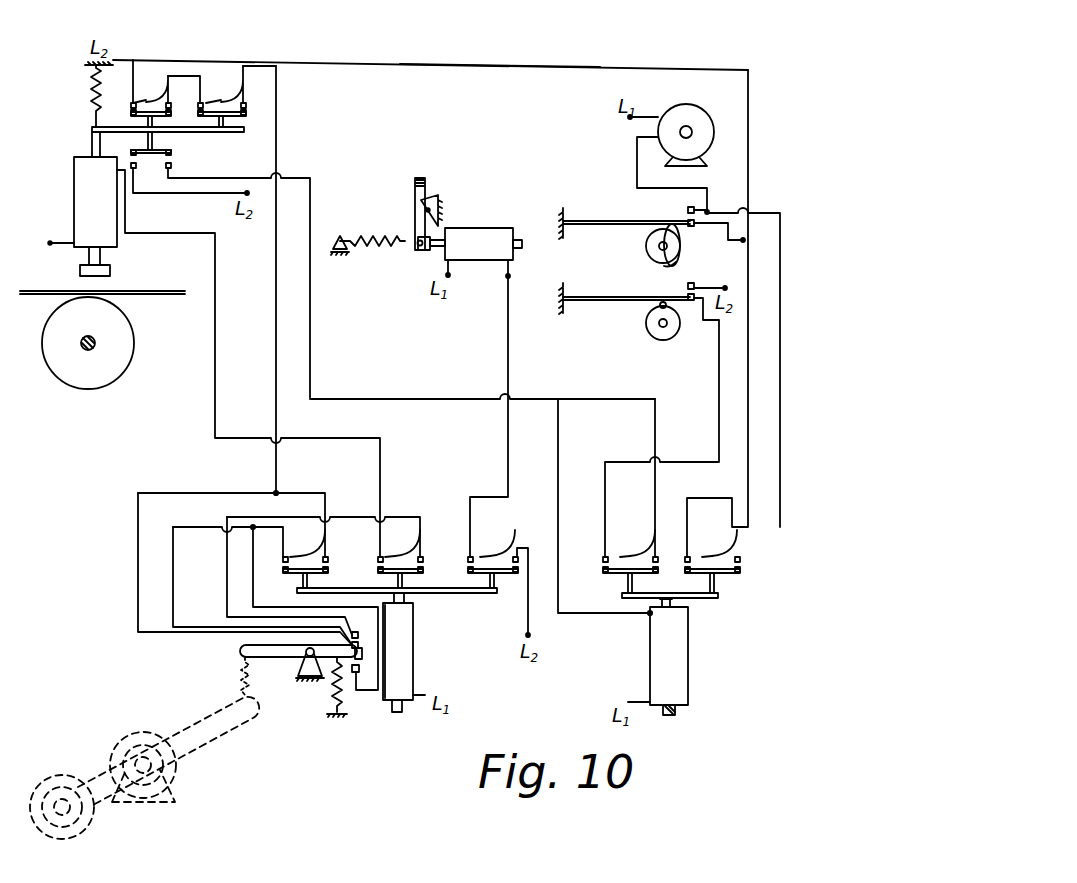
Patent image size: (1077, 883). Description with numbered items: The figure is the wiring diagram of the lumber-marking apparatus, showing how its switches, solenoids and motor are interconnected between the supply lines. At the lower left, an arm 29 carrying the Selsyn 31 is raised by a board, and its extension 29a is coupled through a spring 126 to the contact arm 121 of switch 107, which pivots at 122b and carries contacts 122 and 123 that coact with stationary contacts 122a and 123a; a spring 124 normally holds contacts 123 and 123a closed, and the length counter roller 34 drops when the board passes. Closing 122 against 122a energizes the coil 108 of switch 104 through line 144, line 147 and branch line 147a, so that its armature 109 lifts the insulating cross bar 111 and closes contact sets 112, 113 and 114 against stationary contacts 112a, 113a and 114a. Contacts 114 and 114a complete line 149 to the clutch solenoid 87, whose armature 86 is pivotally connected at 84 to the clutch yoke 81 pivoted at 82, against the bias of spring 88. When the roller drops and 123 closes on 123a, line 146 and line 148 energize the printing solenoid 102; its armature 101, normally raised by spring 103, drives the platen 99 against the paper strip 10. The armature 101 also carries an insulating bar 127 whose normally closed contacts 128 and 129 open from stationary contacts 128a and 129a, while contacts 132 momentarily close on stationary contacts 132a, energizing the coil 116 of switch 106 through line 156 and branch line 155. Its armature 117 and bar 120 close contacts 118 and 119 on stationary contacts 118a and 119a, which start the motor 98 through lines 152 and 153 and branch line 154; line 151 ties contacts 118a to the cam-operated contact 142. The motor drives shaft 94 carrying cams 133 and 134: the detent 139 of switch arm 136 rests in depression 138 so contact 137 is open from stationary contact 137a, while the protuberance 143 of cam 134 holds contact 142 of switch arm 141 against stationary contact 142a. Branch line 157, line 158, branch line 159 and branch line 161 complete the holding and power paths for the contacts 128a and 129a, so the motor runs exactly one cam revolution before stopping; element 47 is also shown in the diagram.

The paper strip 10 is at (155, 291).
The arm 29 is at (100, 772).
The extension 29a is at (200, 745).
The Selsyn 31 is at (75, 823).
The length counter roller 34 is at (60, 838).
The roll 47 is at (95, 345).
The clutch yoke 81 is at (426, 188).
The pivot 82 is at (425, 212).
The pivotal connection 84 is at (417, 246).
The armature 86 is at (432, 250).
The clutch solenoid 87 is at (480, 261).
The spring 88 is at (387, 236).
The shaft 94 is at (660, 247).
The electric motor 98 is at (704, 118).
The printing platen 99 is at (110, 272).
The armature 101 is at (92, 142).
The printing solenoid 102 is at (76, 190).
The spring 103 is at (94, 74).
The switch 104 is at (428, 653).
The switch 106 is at (700, 648).
The switch 107 is at (304, 713).
The coil 108 is at (440, 672).
The armature 109 is at (404, 711).
The cross bar 111 is at (480, 594).
The contacts 112 is at (292, 586).
The stationary contacts 112a is at (303, 556).
The contacts 113 is at (412, 580).
The stationary contacts 113a is at (400, 556).
The contacts 114 is at (520, 582).
The stationary contacts 114a is at (497, 556).
The solenoid coil 116 is at (676, 710).
The armature 117 is at (677, 598).
The contacts 118 is at (615, 580).
The stationary contacts 118a is at (628, 556).
The contacts 119 is at (740, 581).
The stationary contacts 119a is at (712, 556).
The bar 120 is at (647, 598).
The contact arm 121 is at (238, 648).
The contact 122 is at (360, 647).
The stationary contact 122a is at (360, 635).
The pivot 122b is at (307, 658).
The contact 123 is at (356, 674).
The stationary contact 123a is at (371, 692).
The spring 124 is at (332, 708).
The spring 126 is at (240, 676).
The bar 127 is at (92, 129).
The contacts 128 is at (140, 116).
The stationary contacts 128a is at (146, 100).
The contacts 129 is at (246, 114).
The stationary contacts 129a is at (221, 100).
The contacts 132 is at (172, 151).
The stationary contacts 132a is at (172, 166).
The cam 133 is at (650, 245).
The cam 134 is at (650, 325).
The switch arm 136 is at (620, 221).
The contact 137 is at (694, 228).
The stationary contact 137a is at (697, 207).
The depression 138 is at (675, 265).
The detent 139 is at (663, 225).
The switch arm 141 is at (620, 297).
The contact 142 is at (692, 302).
The stationary contact 142a is at (697, 285).
The protuberance 143 is at (660, 306).
The line 144 is at (138, 578).
The line 146 is at (250, 515).
The line 147 is at (198, 512).
The branch line 147a is at (253, 574).
The line 148 is at (370, 438).
The line 149 is at (510, 366).
The line 151 is at (680, 462).
The line 152 is at (745, 440).
The line 153 is at (780, 357).
The branch line 154 is at (637, 165).
The branch line 155 is at (560, 440).
The line 156 is at (312, 342).
The branch line 157 is at (276, 344).
The line 158 is at (133, 60).
The branch line 159 is at (508, 68).
The branch line 161 is at (199, 62).